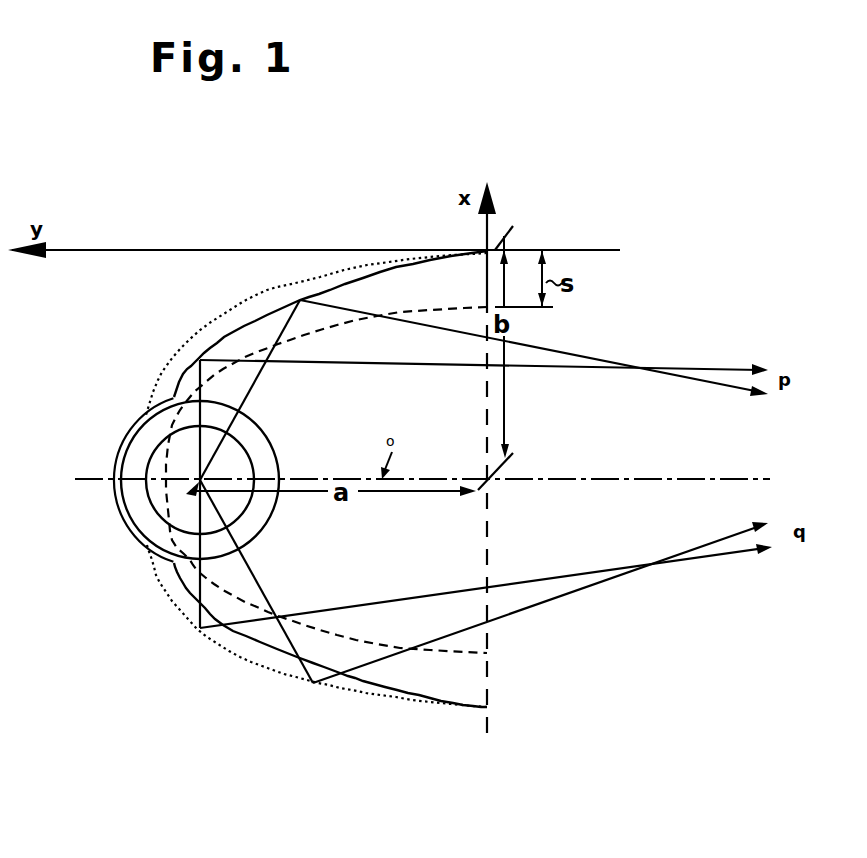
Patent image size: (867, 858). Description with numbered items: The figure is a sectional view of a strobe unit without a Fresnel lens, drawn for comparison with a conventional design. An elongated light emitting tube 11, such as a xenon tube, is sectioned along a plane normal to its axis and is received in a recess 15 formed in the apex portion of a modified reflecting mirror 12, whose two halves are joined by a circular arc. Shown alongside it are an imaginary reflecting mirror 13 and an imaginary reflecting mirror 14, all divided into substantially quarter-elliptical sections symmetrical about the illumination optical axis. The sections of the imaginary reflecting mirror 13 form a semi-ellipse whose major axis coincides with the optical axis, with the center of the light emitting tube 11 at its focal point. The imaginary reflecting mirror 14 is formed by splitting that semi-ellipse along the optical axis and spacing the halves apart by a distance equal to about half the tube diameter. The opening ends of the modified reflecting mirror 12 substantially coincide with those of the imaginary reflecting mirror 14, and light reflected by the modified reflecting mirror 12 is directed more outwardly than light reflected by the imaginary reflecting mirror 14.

The light emitting tube 11 is at (155, 457).
The modified reflecting mirror 12 is at (170, 365).
The imaginary reflecting mirror 13 is at (250, 344).
The imaginary reflecting mirror 14 is at (255, 288).
The recess 15 is at (100, 505).